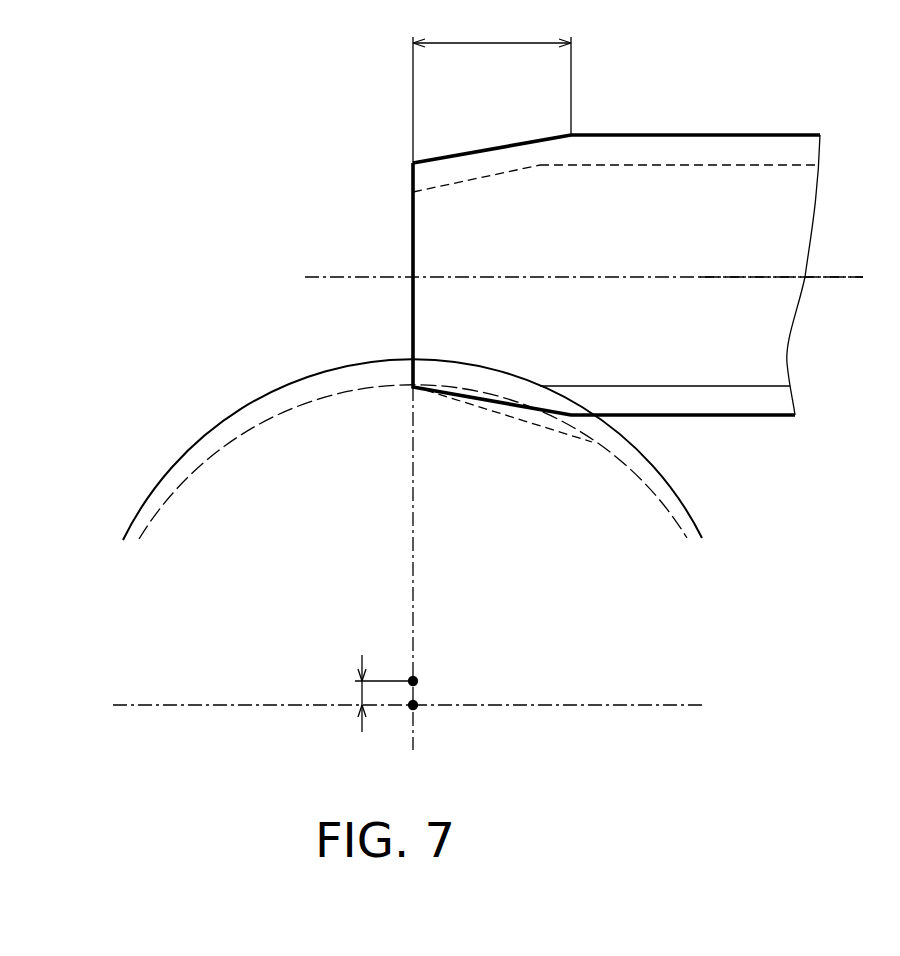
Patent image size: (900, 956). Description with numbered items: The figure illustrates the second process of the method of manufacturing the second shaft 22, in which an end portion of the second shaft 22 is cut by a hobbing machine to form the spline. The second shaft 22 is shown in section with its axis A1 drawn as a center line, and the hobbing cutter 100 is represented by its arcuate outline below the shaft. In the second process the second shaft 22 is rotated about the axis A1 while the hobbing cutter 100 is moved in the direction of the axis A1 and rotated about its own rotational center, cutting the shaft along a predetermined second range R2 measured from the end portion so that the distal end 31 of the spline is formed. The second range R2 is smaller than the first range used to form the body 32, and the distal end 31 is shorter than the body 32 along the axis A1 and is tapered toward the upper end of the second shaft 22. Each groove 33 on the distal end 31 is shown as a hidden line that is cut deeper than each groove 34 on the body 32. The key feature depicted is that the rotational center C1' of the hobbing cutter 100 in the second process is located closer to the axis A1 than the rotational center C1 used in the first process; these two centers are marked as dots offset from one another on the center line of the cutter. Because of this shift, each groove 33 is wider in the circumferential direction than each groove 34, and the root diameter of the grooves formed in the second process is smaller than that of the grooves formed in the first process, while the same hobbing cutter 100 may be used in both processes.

The second shaft 22 is at (535, 244).
The distal end 31 is at (507, 147).
The body 32 is at (652, 135).
The groove 33 is at (452, 190).
The groove 34 is at (697, 165).
The axis A1 is at (745, 275).
The hobbing cutter 100 is at (248, 400).
The rotational center C1 is at (466, 731).
The rotational center C1' is at (440, 638).
The second range R2 is at (492, 85).